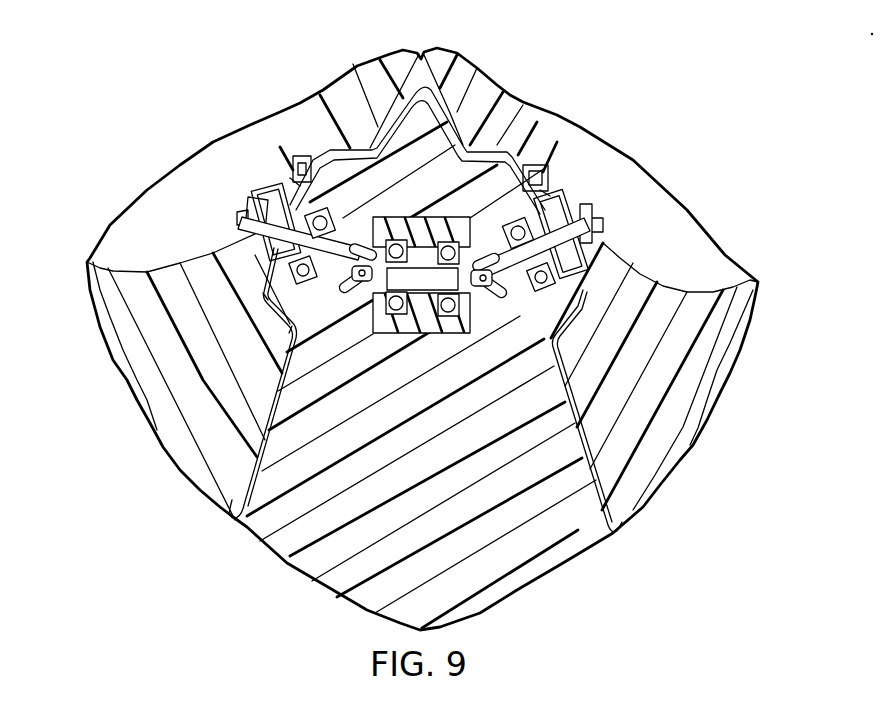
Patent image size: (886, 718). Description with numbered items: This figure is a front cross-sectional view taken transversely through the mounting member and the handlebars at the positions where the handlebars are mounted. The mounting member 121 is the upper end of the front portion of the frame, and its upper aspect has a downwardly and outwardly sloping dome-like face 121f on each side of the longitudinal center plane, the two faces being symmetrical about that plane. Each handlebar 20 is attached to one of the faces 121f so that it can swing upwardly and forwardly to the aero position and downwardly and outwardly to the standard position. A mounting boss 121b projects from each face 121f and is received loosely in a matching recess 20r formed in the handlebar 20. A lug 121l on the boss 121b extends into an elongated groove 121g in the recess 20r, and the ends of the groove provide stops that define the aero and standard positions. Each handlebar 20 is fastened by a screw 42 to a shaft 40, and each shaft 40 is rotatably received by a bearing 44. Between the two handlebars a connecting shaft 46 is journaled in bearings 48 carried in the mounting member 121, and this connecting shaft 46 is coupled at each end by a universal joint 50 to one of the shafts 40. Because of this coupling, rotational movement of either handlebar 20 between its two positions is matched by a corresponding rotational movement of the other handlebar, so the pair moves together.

The handlebar 20 is at (687, 197).
The recess 20r is at (343, 153).
The shaft 40 is at (280, 230).
The screw 42 is at (277, 231).
The bearing 44 is at (262, 291).
The connecting shaft 46 is at (417, 277).
The bearings 48 is at (393, 227).
The universal joint 50 is at (348, 285).
The upper end of the front portion of the frame (mounting member) 121 is at (260, 540).
The mounting boss 121b is at (267, 283).
The dome-like face 121f is at (265, 438).
The elongated groove 121g is at (300, 172).
The lug 121l is at (298, 178).